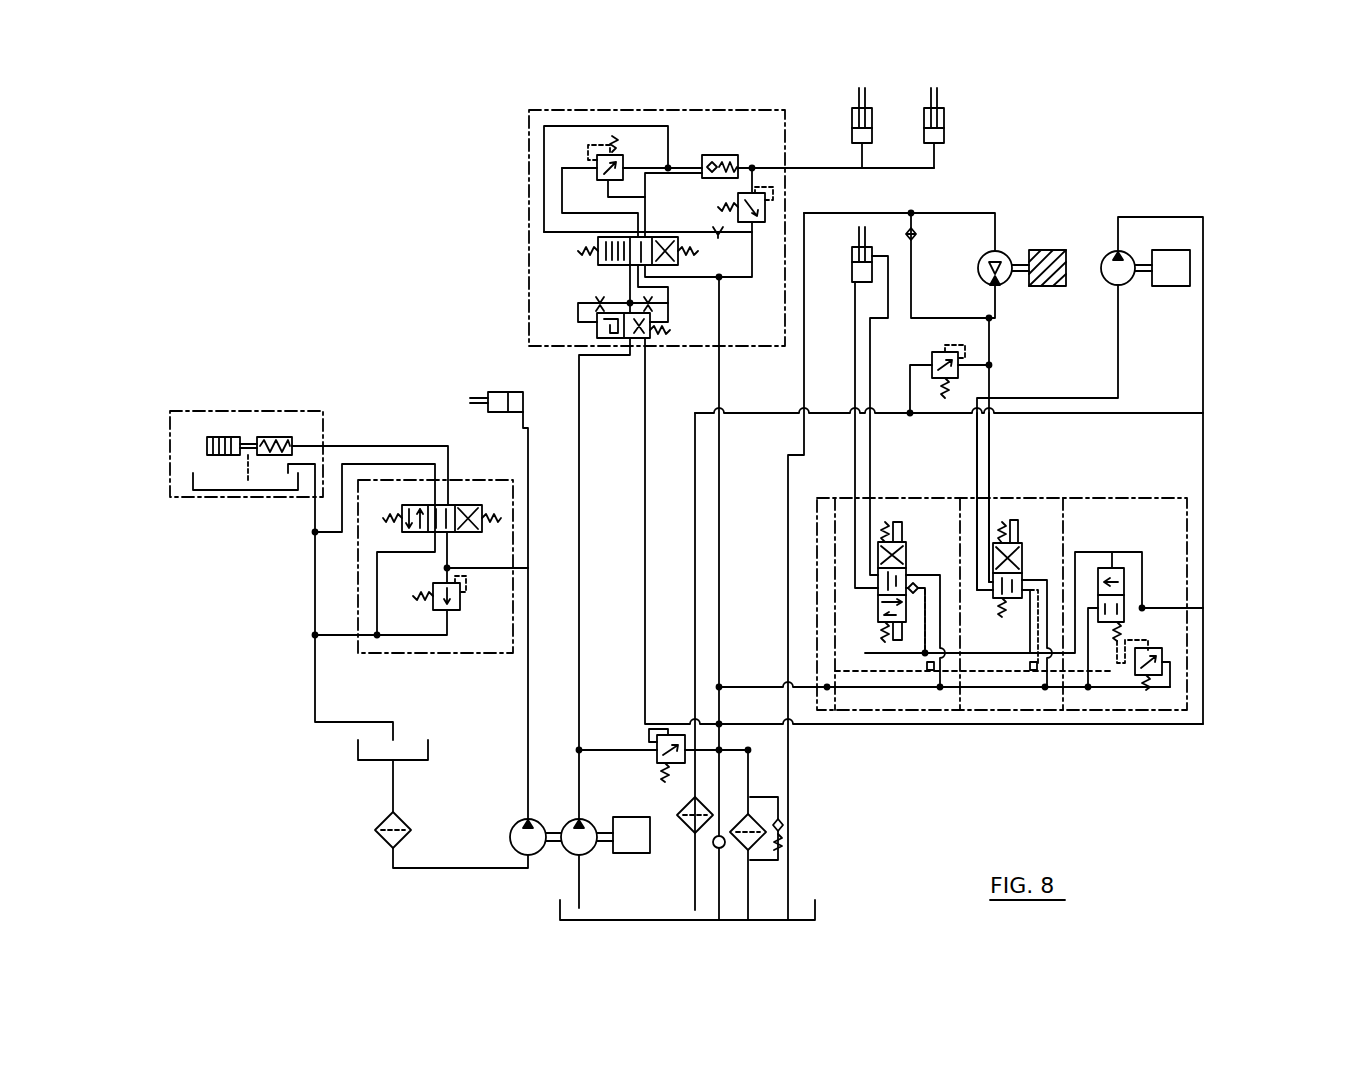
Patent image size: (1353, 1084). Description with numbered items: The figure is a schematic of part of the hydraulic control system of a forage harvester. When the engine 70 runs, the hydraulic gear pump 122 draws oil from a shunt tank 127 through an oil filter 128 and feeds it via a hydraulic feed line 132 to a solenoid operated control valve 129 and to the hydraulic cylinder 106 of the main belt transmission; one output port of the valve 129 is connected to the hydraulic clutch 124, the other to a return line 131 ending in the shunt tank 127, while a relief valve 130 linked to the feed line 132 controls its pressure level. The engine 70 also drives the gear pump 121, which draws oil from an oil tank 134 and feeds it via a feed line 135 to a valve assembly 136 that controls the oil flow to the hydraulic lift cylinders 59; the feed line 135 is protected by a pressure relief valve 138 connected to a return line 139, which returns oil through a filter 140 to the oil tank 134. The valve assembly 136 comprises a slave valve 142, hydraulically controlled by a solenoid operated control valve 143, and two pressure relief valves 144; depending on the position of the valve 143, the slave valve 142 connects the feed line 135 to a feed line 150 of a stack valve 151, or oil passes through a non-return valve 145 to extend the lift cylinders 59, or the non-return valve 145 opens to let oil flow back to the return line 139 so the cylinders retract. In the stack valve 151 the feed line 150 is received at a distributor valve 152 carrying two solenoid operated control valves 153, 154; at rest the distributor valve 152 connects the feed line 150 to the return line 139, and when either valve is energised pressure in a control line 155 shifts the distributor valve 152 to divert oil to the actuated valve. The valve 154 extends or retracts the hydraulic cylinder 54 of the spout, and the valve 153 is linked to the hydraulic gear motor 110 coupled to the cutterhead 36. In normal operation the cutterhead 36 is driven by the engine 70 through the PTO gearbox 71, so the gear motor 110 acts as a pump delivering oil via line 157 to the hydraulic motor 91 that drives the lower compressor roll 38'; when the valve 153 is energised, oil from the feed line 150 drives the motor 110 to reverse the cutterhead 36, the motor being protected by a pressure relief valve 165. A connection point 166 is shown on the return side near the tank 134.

The cutterhead 36 is at (1048, 250).
The lower compressor roll 38' is at (1170, 234).
The hydraulic cylinder 54 is at (853, 270).
The hydraulic lift cylinders 59 is at (872, 122).
The engine 70 is at (637, 853).
The PTO gearbox 71 is at (217, 411).
The hydraulic motor 91 is at (1118, 251).
The hydraulic cylinder 106 is at (500, 392).
The hydraulic gear motor 110 is at (978, 268).
The gear pump 121 is at (567, 822).
The hydraulic gear pump 122 is at (513, 826).
The hydraulic clutch 124 is at (277, 437).
The shunt tank 127 is at (358, 748).
The oil filter 128 is at (391, 828).
The solenoid operated control valve 129 is at (462, 505).
The relief valve 130 is at (460, 611).
The return line 131 is at (314, 597).
The hydraulic feed line 132 is at (527, 696).
The oil tank 134 is at (560, 905).
The feed line 135 is at (581, 574).
The valve assembly 136 is at (529, 268).
The pressure relief valve 138 is at (657, 756).
The return line 139 is at (720, 604).
The filter 140 is at (768, 840).
The slave valve 142 is at (597, 322).
The solenoid operated control valve 143 is at (598, 272).
The pressure relief valves 144 is at (600, 181).
The non-return valve 145 is at (712, 156).
The feed line 150 is at (646, 578).
The stack valve 151 is at (1228, 577).
The distributor valve 152 is at (1124, 578).
The solenoid operated control valve 153 is at (1022, 560).
The solenoid operated control valve 154 is at (906, 563).
The control line 155 is at (851, 669).
The line 157 is at (1118, 372).
The pressure relief valve 165 is at (932, 361).
The connection point 166 is at (723, 850).